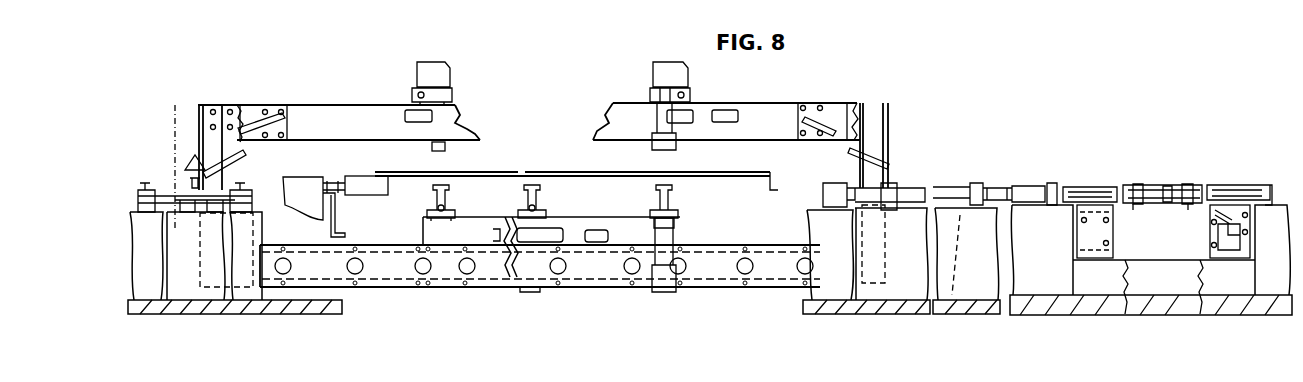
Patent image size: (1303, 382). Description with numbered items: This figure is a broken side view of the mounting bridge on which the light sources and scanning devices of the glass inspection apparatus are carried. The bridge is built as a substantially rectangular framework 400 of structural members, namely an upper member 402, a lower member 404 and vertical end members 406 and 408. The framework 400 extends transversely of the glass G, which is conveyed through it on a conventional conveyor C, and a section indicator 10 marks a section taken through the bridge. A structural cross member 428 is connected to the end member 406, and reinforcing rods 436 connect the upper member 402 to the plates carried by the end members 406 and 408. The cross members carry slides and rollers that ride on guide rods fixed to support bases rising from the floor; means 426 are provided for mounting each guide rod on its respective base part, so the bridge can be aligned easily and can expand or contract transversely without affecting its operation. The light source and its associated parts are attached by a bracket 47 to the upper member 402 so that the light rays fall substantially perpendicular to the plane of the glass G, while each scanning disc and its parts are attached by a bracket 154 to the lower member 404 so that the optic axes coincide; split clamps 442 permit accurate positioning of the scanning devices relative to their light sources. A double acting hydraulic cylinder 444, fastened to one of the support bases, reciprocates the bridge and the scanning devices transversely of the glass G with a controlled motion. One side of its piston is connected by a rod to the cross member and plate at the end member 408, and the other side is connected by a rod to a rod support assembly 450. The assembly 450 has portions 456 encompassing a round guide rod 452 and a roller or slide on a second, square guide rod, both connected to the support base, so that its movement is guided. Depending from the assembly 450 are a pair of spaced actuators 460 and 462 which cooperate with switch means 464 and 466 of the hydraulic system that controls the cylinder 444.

The section line 10 is at (179, 107).
The bracket 47 is at (655, 95).
The bracket 154 is at (650, 220).
The framework 400 is at (483, 292).
The upper member 402 is at (335, 112).
The lower member 404 is at (551, 250).
The vertical end member 406 is at (219, 116).
The vertical end member 408 is at (875, 110).
The mounting means 426 is at (145, 183).
The structural cross member 428 is at (189, 168).
The reinforcing rods 436 is at (240, 148).
The split clamps 442 is at (413, 97).
The double acting hydraulic cylinder 444 is at (1018, 186).
The rod support assembly 450 is at (1194, 178).
The guide rod 452 is at (1218, 190).
The portions 456 is at (1180, 181).
The actuator 460 is at (1141, 206).
The actuator 462 is at (1191, 210).
The switch means 464 is at (1113, 224).
The switch means 466 is at (1218, 228).
The glass G is at (521, 170).
The conveyor C is at (384, 201).